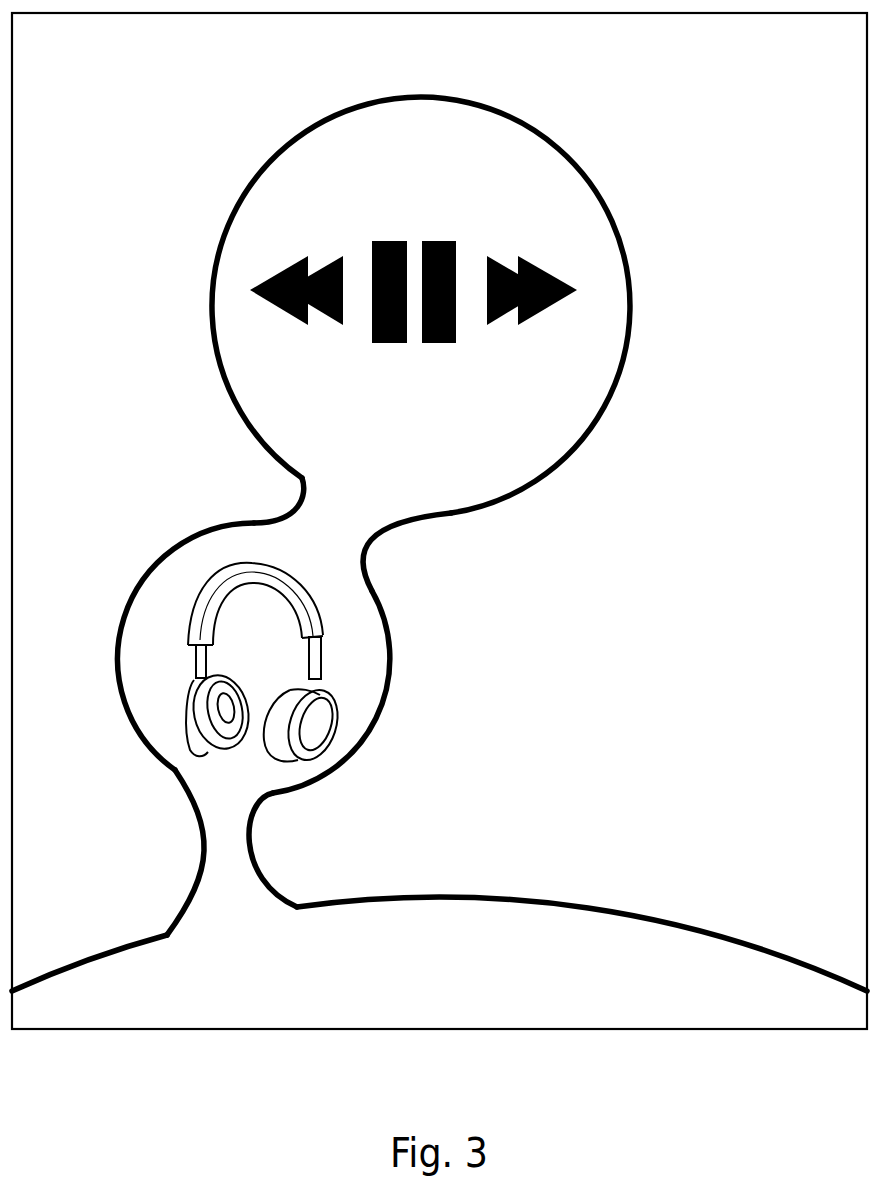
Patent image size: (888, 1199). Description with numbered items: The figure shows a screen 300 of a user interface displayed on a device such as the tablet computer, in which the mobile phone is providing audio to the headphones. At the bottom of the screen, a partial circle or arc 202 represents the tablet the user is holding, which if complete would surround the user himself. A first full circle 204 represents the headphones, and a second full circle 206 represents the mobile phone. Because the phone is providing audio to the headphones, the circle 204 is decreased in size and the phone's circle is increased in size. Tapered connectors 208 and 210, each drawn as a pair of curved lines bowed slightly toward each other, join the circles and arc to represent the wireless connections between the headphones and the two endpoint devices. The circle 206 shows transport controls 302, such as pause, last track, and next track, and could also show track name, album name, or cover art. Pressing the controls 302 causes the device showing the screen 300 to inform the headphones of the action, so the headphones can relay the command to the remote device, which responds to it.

The screen 300 is at (80, 58).
The partial circle or arc 202 is at (701, 931).
The first full circle 204 is at (342, 767).
The second full circle 206 is at (577, 448).
The tapered connector 208 is at (376, 553).
The tapered connector 210 is at (252, 851).
The transport controls 302 is at (437, 242).